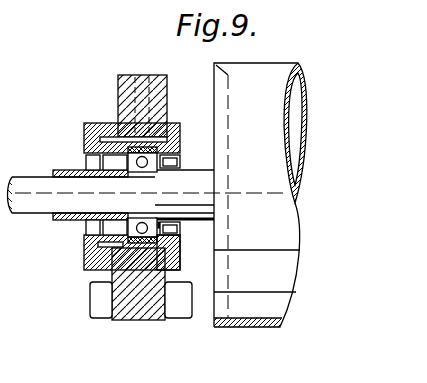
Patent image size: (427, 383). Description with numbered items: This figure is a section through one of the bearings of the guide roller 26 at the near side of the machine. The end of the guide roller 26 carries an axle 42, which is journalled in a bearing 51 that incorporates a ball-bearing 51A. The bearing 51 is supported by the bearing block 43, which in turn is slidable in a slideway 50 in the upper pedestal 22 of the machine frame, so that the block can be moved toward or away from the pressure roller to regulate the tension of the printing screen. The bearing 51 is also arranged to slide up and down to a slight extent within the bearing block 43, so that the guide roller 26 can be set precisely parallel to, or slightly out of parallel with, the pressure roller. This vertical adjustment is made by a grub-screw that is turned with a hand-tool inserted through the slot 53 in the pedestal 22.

The clamping block 22 is at (118, 90).
The disc 26 is at (266, 315).
The hub 42 is at (197, 222).
The lower bearing ring 43 is at (105, 257).
The upper bearing ring 50 is at (92, 127).
The bearing 51 is at (157, 306).
The ball bearing 51A is at (143, 240).
The bolt 53 is at (133, 86).